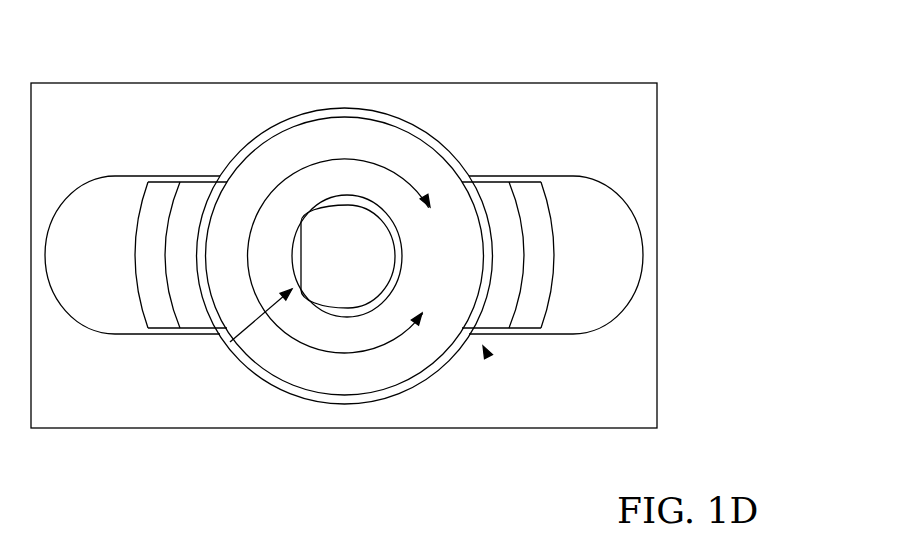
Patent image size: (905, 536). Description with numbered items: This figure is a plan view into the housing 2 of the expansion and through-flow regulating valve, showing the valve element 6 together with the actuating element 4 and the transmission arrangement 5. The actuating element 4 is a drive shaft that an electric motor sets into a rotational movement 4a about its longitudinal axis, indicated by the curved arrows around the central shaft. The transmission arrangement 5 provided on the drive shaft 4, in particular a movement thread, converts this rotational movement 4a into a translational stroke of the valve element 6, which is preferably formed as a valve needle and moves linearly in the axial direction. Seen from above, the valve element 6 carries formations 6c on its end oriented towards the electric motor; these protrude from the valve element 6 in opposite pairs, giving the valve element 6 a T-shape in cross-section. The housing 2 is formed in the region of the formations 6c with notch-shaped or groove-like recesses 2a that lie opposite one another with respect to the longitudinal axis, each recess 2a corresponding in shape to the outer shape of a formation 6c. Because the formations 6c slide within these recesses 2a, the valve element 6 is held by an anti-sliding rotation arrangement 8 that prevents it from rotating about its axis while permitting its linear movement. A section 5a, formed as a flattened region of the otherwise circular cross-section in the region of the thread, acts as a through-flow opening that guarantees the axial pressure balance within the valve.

The housing 2 is at (633, 165).
The recesses 2a is at (196, 176).
The actuating element 4 is at (339, 342).
The transmission arrangement 5 is at (350, 277).
The rotational movement 4a is at (368, 157).
The section 5a is at (230, 342).
The valve element 6 is at (308, 148).
The formations 6c is at (152, 230).
The anti-sliding rotation arrangement 8 is at (483, 346).